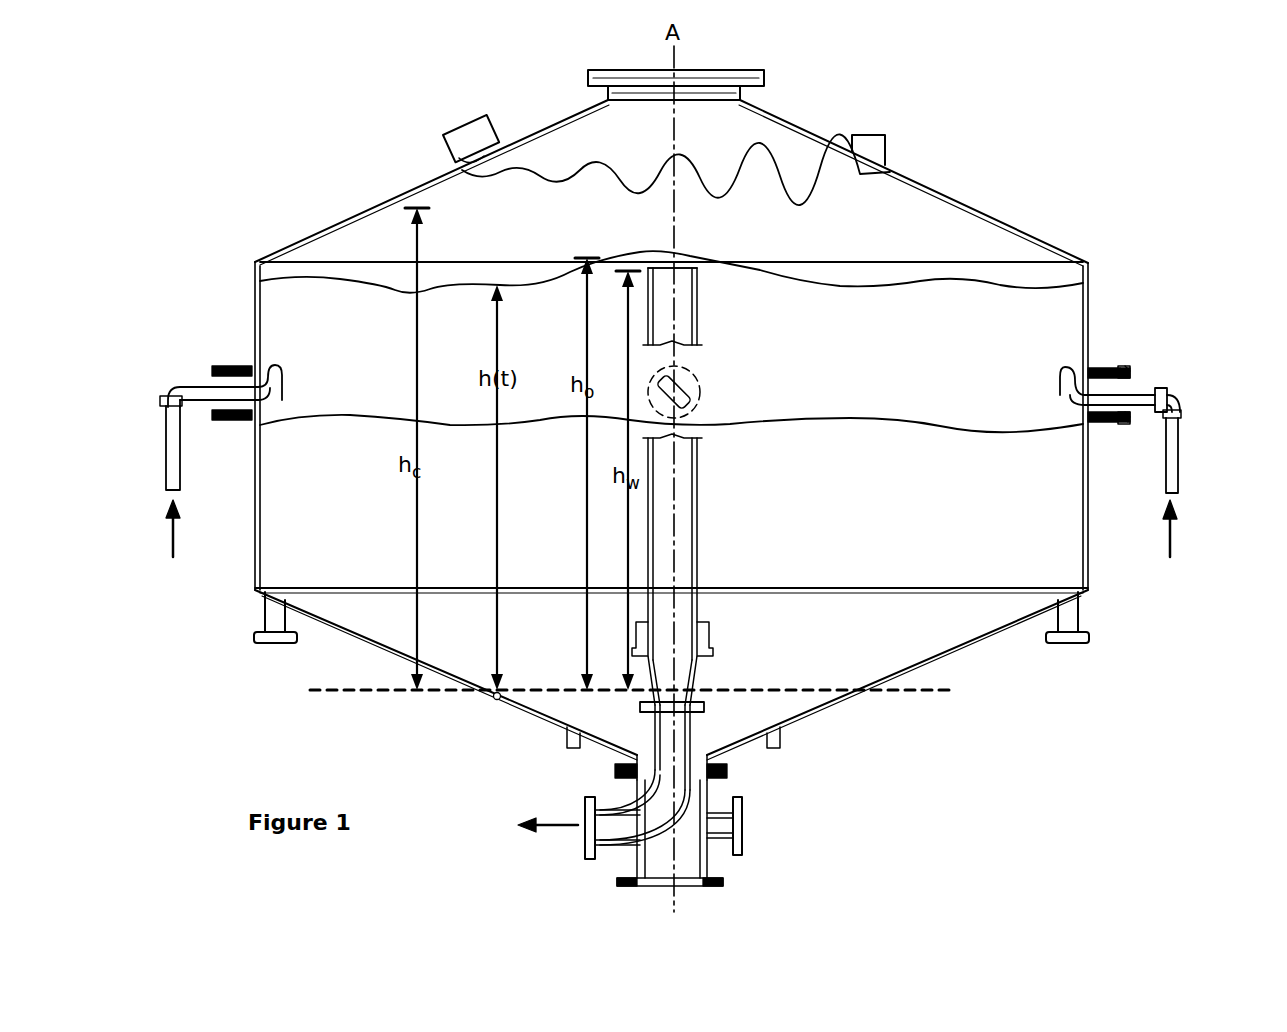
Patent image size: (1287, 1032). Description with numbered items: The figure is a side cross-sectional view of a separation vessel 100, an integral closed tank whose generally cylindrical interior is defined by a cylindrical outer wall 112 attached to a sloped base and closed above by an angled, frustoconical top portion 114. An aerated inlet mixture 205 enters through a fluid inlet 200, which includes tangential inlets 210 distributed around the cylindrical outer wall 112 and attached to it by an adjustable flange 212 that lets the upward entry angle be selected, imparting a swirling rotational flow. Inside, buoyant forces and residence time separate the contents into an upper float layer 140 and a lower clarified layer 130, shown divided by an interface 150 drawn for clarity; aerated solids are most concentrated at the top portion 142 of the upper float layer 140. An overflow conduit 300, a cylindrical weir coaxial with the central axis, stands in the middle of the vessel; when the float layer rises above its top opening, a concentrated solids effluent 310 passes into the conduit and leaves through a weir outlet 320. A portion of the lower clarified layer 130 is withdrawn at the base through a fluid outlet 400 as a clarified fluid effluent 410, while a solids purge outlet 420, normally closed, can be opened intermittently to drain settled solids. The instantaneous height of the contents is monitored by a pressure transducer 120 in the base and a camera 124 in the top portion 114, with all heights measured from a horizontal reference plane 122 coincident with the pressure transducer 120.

The separation vessel 100 is at (968, 192).
The cylindrical outer wall 112 is at (1090, 556).
The top portion 114 is at (1044, 234).
The pressure transducer 120 is at (496, 700).
The horizontal reference plane 122 is at (903, 694).
The camera 124 is at (457, 128).
The lower clarified layer 130 is at (1060, 508).
The upper float layer 140 is at (1067, 320).
The top portion of the upper float layer 142 is at (856, 287).
The interface 150 is at (883, 426).
The fluid inlet 200 is at (1183, 470).
The aerated inlet mixture 205 is at (1192, 532).
The tangential inlets 210 is at (1080, 352).
The adjustable flange 212 is at (1132, 378).
The overflow conduit 300 is at (702, 551).
The concentrated solids effluent 310 is at (556, 822).
The weir outlet 320 is at (585, 834).
The fluid outlet 400 is at (716, 846).
The clarified fluid effluent 410 is at (744, 830).
The solids purge outlet 420 is at (658, 886).